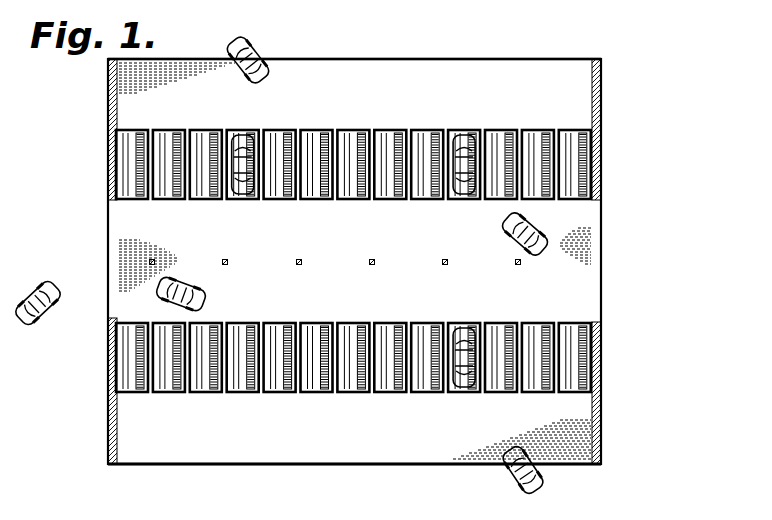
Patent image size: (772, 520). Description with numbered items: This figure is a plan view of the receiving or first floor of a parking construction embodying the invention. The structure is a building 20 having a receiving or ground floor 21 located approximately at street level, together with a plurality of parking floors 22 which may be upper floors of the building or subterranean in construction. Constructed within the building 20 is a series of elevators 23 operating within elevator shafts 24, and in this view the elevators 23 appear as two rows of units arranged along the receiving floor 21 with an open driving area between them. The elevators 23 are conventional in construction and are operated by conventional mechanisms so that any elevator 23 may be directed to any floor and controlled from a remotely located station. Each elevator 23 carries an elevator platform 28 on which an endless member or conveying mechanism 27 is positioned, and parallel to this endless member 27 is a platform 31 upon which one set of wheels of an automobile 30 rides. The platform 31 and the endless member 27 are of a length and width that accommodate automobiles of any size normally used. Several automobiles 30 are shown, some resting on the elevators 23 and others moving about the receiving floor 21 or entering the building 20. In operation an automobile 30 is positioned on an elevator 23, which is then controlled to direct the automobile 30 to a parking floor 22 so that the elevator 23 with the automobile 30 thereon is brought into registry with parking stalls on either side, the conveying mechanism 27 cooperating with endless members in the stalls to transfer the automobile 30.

The building 20 is at (604, 103).
The receiving or ground floor 21 is at (528, 72).
The parking floors 22 is at (512, 131).
The elevators 23 is at (392, 130).
The elevator shafts 24 is at (392, 197).
The endless member or conveying mechanism 27 is at (181, 130).
The elevator platform 28 is at (317, 197).
The automobile 30 is at (244, 139).
The platform 31 is at (350, 130).